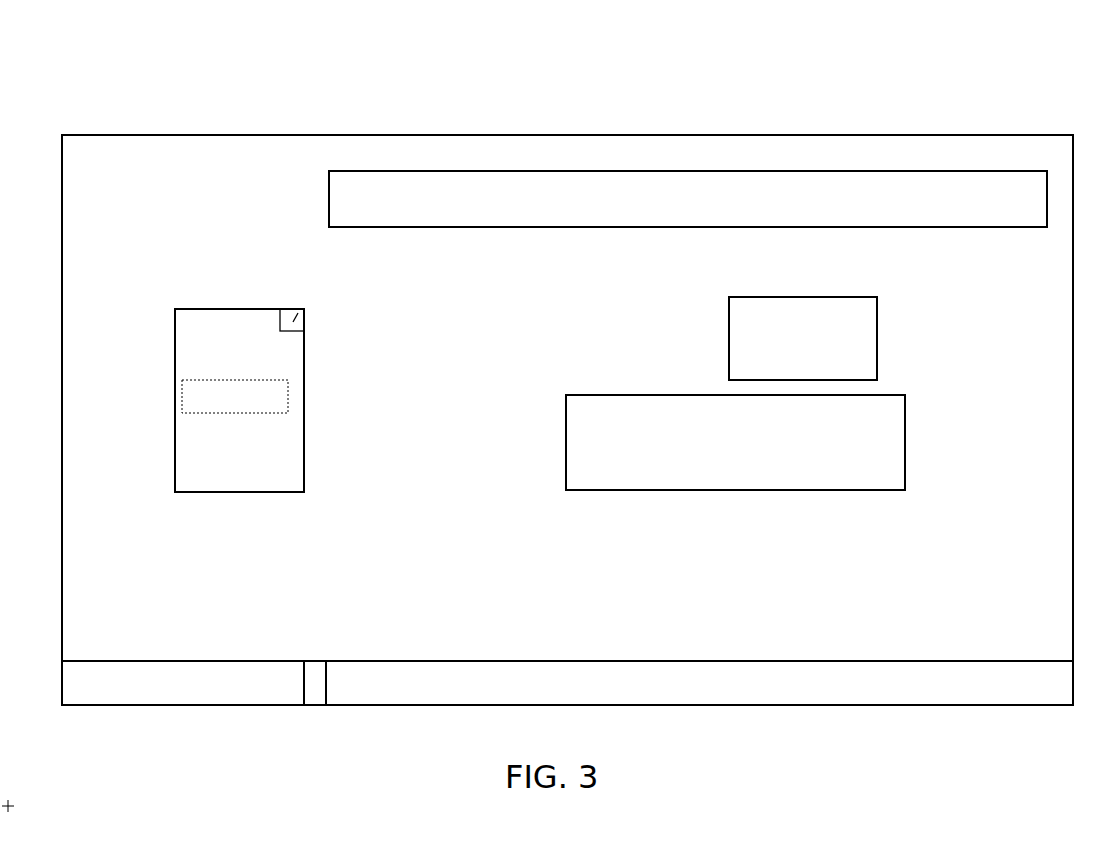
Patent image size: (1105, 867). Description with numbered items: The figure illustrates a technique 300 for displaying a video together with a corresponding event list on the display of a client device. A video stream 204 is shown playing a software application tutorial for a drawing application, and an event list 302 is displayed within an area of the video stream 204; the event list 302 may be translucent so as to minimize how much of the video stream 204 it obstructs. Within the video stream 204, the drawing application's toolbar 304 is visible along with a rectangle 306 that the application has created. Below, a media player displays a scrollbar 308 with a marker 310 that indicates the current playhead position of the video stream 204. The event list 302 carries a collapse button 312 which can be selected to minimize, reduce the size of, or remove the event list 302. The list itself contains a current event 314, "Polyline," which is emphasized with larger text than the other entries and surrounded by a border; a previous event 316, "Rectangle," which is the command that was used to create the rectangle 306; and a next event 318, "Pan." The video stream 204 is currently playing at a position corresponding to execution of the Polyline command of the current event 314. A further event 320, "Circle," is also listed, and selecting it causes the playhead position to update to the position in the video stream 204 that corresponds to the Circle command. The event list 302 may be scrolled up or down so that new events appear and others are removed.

The technique 300 is at (930, 94).
The video stream 204 is at (567, 420).
The event list 302 is at (215, 308).
The toolbar 304 is at (491, 228).
The rectangle 306 is at (727, 340).
The scrollbar 308 is at (491, 660).
The marker 310 is at (328, 683).
The collapse button 312 is at (302, 311).
The current event 314 is at (183, 396).
The previous event 316 is at (187, 368).
The next event 318 is at (185, 421).
The event 320 is at (185, 441).